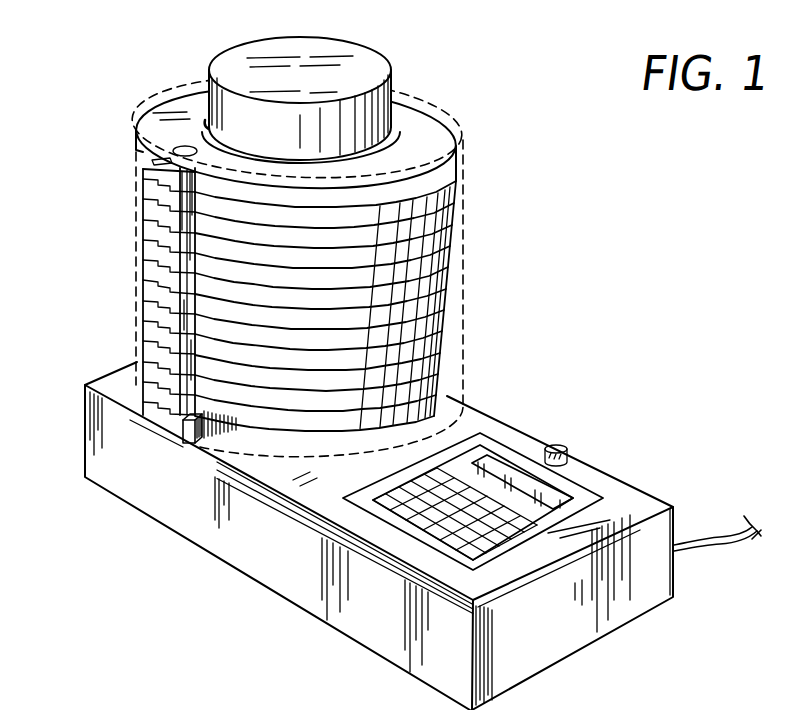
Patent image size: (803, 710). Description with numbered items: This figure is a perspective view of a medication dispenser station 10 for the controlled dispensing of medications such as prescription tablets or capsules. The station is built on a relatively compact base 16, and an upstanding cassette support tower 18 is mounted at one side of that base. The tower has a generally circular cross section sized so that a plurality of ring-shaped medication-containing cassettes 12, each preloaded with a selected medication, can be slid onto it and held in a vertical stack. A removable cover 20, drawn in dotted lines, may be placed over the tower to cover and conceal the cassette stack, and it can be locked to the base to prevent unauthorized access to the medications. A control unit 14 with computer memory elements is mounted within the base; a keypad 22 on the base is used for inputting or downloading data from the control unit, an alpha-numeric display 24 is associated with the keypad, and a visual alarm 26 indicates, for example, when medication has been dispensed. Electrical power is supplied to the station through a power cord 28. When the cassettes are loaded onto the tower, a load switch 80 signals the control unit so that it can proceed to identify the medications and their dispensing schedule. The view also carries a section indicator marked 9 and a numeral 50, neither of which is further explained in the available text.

The medication dispenser station 10 is at (572, 300).
The medication-containing cassettes 12 is at (432, 252).
The control unit 14 is at (378, 513).
The base 16 is at (537, 627).
The cassette support tower 18 is at (367, 64).
The removable cover 20 is at (478, 102).
The keypad 22 is at (440, 492).
The alpha-numeric display 24 is at (572, 500).
The visual alarm 26 is at (557, 446).
The power cord 28 is at (710, 546).
The base element 50 is at (300, 706).
The load switch 80 is at (208, 127).
The section line for FIG. 9 is at (478, 143).